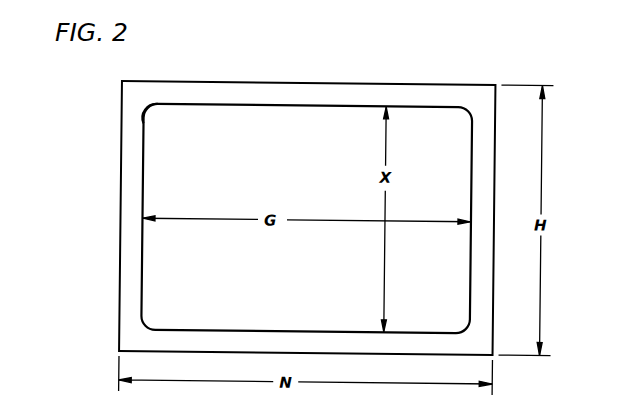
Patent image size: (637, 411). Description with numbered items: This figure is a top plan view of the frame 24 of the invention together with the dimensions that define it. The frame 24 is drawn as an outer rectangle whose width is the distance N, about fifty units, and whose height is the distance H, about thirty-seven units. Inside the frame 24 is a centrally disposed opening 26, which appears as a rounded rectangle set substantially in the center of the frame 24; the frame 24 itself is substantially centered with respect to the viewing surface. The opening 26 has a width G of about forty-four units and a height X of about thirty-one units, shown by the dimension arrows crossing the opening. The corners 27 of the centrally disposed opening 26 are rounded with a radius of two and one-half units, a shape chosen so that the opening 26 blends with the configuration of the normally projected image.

The frame 24 is at (120, 186).
The centrally disposed opening 26 is at (342, 120).
The corners 27 is at (155, 108).